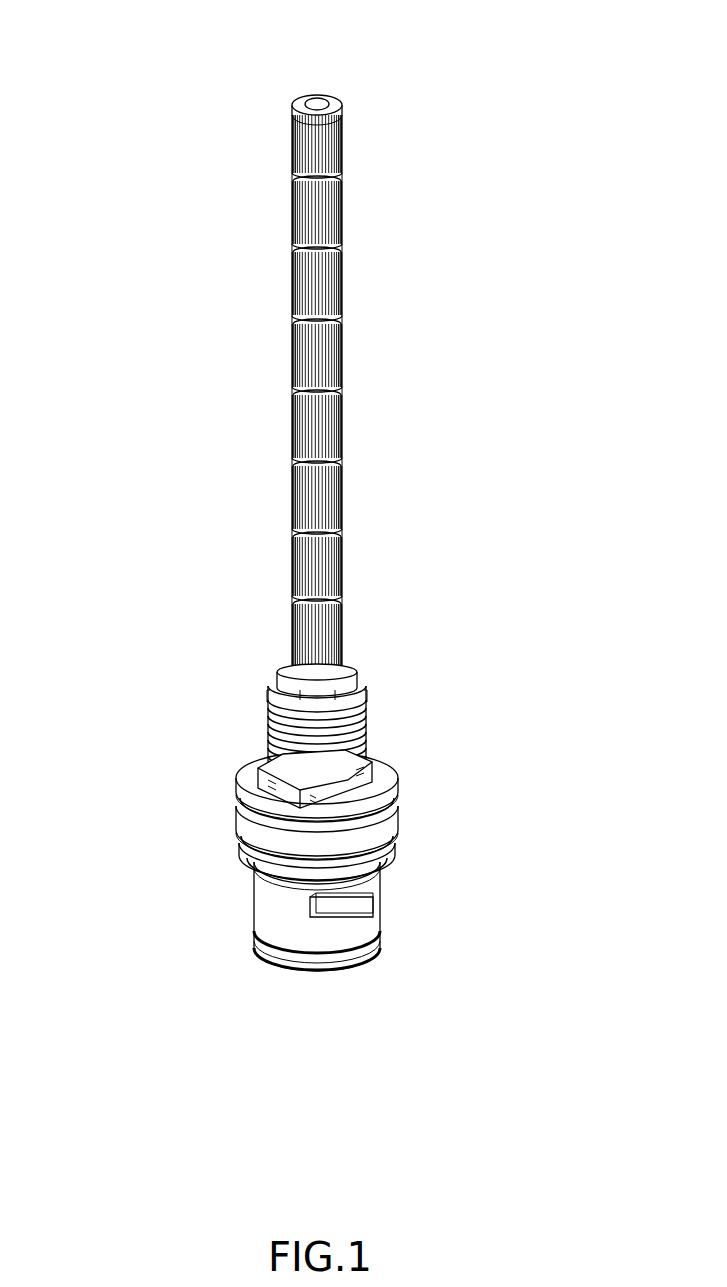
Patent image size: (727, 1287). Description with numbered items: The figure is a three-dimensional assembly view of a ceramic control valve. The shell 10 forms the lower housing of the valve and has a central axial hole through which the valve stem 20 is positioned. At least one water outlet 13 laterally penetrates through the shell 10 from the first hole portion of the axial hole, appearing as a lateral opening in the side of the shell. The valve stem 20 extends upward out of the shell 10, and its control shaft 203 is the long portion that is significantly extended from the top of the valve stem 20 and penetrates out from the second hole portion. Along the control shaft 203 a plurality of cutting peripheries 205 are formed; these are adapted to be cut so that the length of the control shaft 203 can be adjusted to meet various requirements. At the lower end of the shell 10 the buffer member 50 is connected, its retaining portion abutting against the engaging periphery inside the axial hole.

The shell 10 is at (241, 851).
The water outlet 13 is at (373, 897).
The valve stem 20 is at (283, 369).
The control shaft 203 is at (330, 93).
The cutting peripheries 205 is at (333, 320).
The buffer member 50 is at (256, 950).